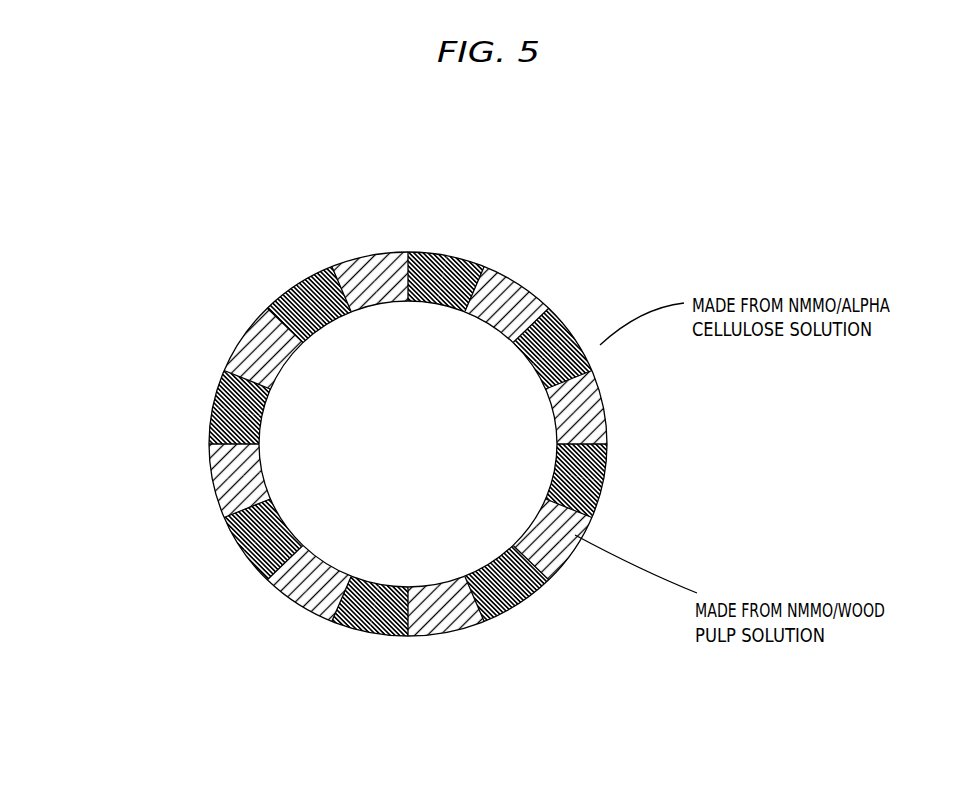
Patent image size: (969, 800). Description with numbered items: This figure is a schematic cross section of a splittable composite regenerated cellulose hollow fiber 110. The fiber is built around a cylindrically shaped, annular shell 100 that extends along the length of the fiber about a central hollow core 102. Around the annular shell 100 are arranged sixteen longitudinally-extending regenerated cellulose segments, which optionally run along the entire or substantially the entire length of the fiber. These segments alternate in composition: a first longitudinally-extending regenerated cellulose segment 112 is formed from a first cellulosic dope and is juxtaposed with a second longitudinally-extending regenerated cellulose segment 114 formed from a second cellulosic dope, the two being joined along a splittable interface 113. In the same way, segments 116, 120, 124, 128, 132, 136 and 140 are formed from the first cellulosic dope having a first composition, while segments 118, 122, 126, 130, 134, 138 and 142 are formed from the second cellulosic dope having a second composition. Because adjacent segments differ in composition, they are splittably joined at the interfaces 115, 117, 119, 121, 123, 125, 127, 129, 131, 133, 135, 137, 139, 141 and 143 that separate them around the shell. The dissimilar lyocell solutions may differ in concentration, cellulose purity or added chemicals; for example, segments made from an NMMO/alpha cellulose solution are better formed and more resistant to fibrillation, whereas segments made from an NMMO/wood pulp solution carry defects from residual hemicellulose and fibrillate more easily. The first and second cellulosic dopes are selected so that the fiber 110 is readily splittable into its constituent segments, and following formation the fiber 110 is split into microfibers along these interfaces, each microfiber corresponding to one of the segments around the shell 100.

The annular shell 100 is at (253, 584).
The hollow core 102 is at (430, 450).
The splittable composite regenerated cellulose hollow fiber 110 is at (128, 203).
The first longitudinally-extending regenerated cellulose segment 112 is at (425, 278).
The splittable interface 113 is at (458, 284).
The second longitudinally-extending regenerated cellulose segment 114 is at (490, 297).
The splittable interface 115 is at (518, 315).
The regenerated cellulose segment 116 is at (542, 338).
The splittable interface 117 is at (561, 365).
The regenerated cellulose segment 118 is at (574, 396).
The splittable interface 119 is at (580, 428).
The regenerated cellulose segment 120 is at (580, 460).
The splittable interface 121 is at (574, 492).
The regenerated cellulose segment 122 is at (561, 523).
The splittable interface 123 is at (542, 550).
The regenerated cellulose segment 124 is at (518, 573).
The splittable interface 125 is at (490, 591).
The regenerated cellulose segment 126 is at (458, 604).
The splittable interface 127 is at (425, 610).
The regenerated cellulose segment 128 is at (391, 610).
The splittable interface 129 is at (358, 604).
The regenerated cellulose segment 130 is at (326, 591).
The splittable interface 131 is at (298, 573).
The regenerated cellulose segment 132 is at (274, 550).
The splittable interface 133 is at (255, 523).
The regenerated cellulose segment 134 is at (242, 492).
The splittable interface 135 is at (236, 460).
The regenerated cellulose segment 136 is at (236, 428).
The splittable interface 137 is at (242, 395).
The regenerated cellulose segment 138 is at (255, 365).
The splittable interface 139 is at (274, 338).
The regenerated cellulose segment 140 is at (298, 315).
The splittable interface 141 is at (326, 297).
The regenerated cellulose segment 142 is at (358, 284).
The splittable interface 143 is at (391, 278).